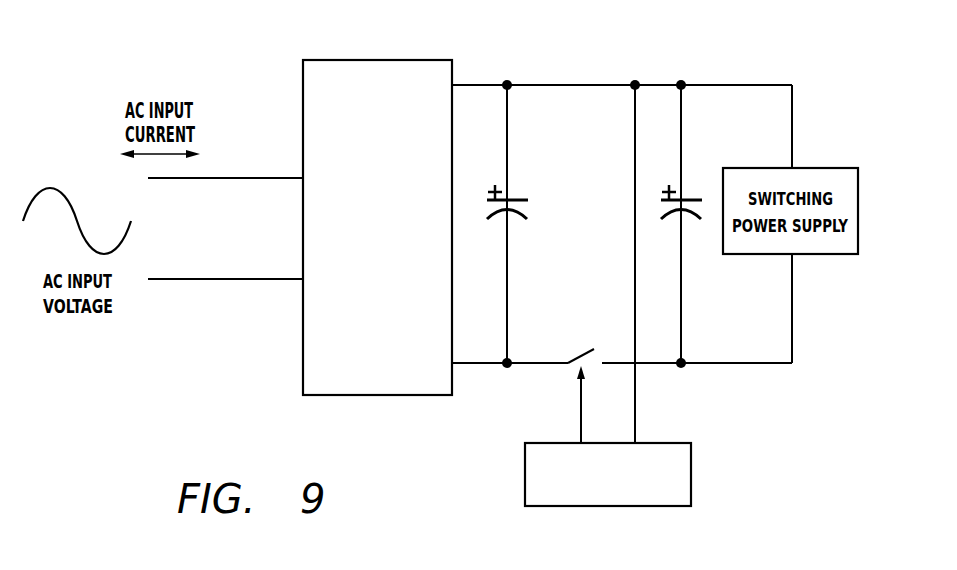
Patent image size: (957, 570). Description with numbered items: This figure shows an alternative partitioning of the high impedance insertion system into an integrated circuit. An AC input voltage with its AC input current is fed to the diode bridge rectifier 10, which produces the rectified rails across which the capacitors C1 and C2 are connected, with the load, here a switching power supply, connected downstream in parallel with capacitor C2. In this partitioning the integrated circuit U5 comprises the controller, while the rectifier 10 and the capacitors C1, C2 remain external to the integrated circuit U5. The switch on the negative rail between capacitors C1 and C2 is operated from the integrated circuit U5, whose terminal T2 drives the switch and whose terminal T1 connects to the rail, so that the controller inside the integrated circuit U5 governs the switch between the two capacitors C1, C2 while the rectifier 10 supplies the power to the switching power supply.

The diode bridge rectifier 10 is at (337, 60).
The capacitor C1 is at (507, 224).
The capacitor C2 is at (682, 224).
The terminal T1 connection T1 is at (642, 261).
The terminal T2 switch control T2 is at (573, 404).
The integrated circuit U5 is at (608, 474).